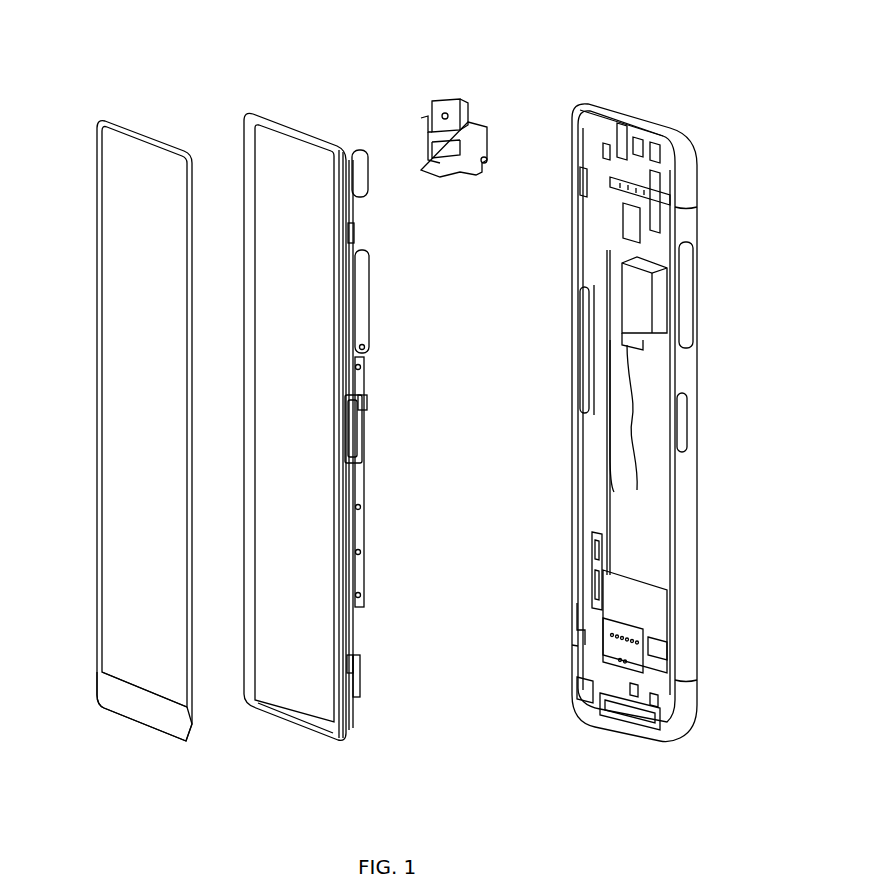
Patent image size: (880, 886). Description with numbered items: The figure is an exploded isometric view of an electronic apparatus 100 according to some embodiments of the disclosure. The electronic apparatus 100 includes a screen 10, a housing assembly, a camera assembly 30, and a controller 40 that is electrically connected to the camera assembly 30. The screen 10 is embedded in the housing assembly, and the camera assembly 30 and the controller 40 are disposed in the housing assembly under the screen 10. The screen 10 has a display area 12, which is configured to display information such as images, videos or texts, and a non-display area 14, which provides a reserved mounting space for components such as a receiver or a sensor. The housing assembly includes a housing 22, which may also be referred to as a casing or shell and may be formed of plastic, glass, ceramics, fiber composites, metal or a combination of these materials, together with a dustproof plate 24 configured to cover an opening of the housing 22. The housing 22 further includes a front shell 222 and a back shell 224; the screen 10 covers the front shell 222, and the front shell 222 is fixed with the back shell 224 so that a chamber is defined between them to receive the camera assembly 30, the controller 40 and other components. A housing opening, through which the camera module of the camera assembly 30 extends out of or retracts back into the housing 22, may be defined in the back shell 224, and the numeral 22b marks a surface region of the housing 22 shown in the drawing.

The electronic apparatus 100 is at (61, 31).
The screen 10 is at (130, 460).
The display area 12 is at (117, 613).
The non-display area 14 is at (117, 692).
The housing 22 is at (522, 788).
The front shell 222 is at (356, 710).
The back shell 224 is at (634, 425).
The inner surface of rear housing 22b is at (642, 570).
The dustproof plate 24 is at (605, 108).
The camera assembly 30 is at (462, 86).
The controller 40 is at (647, 302).